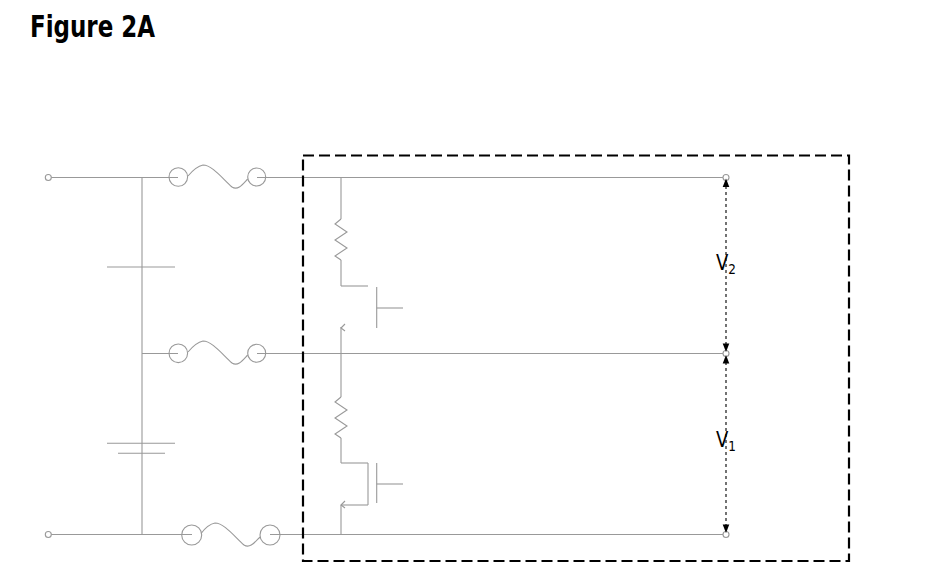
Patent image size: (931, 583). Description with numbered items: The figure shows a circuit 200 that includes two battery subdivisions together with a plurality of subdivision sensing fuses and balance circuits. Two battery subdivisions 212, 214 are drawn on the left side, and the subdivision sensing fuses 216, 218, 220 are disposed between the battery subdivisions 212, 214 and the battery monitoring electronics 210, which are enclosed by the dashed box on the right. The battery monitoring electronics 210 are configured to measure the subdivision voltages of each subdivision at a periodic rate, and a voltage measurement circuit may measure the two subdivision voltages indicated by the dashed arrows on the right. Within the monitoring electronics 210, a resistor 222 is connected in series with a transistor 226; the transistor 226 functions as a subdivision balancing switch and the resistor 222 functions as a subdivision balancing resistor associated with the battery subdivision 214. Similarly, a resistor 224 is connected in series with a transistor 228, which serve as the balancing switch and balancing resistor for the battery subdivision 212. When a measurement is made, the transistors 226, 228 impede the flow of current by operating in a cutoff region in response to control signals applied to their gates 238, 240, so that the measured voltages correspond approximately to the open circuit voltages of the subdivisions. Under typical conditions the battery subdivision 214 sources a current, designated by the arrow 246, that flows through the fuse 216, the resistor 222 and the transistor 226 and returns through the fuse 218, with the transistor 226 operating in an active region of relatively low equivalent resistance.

The circuit 200 is at (132, 117).
The battery monitoring electronics 210 is at (678, 154).
The battery subdivision 212 is at (118, 441).
The battery subdivision 214 is at (117, 264).
The subdivision sensing fuse 216 is at (206, 165).
The subdivision sensing fuse 218 is at (203, 341).
The subdivision sensing fuse 220 is at (213, 524).
The resistor 222 is at (348, 235).
The resistor 224 is at (348, 411).
The transistor 226 is at (355, 287).
The transistor 228 is at (355, 464).
The transistor gate 238 is at (387, 309).
The transistor gate 240 is at (387, 485).
The arrow 246 is at (442, 310).